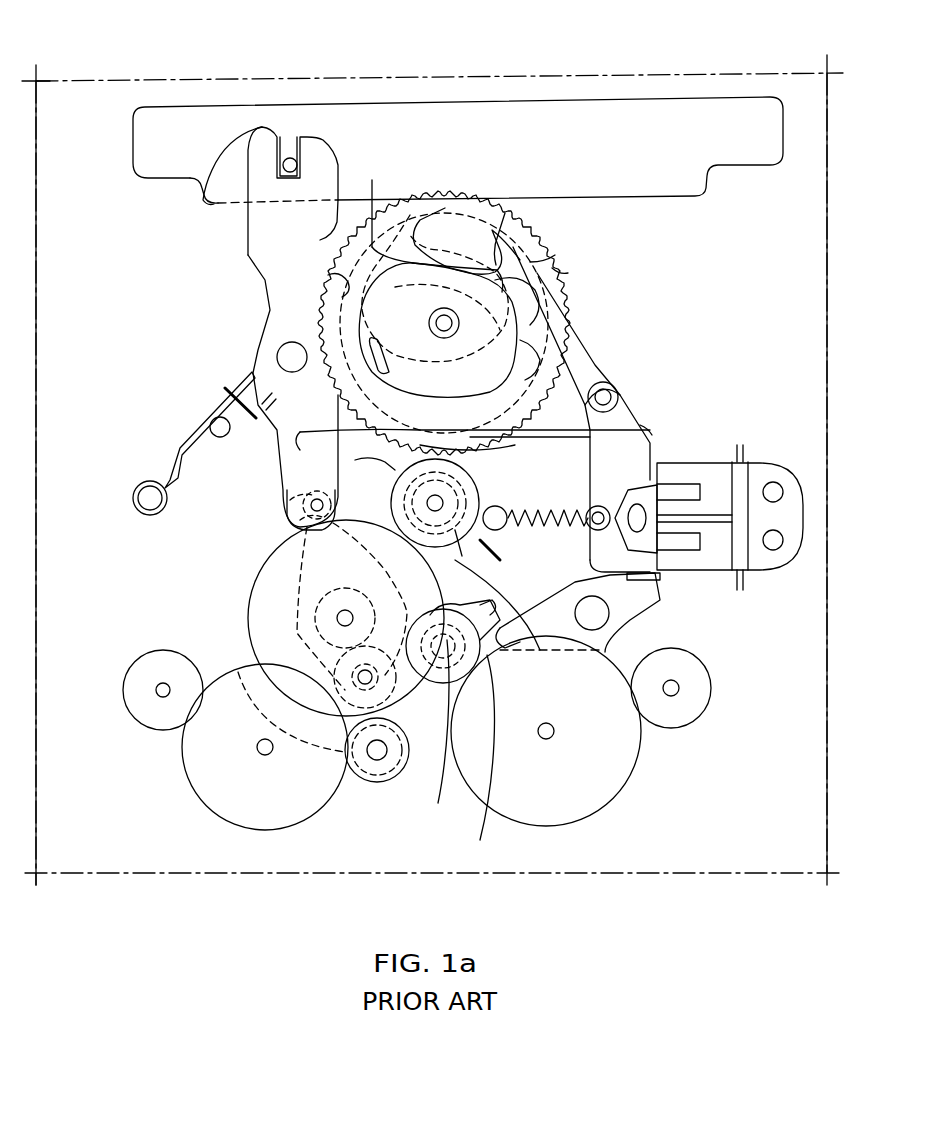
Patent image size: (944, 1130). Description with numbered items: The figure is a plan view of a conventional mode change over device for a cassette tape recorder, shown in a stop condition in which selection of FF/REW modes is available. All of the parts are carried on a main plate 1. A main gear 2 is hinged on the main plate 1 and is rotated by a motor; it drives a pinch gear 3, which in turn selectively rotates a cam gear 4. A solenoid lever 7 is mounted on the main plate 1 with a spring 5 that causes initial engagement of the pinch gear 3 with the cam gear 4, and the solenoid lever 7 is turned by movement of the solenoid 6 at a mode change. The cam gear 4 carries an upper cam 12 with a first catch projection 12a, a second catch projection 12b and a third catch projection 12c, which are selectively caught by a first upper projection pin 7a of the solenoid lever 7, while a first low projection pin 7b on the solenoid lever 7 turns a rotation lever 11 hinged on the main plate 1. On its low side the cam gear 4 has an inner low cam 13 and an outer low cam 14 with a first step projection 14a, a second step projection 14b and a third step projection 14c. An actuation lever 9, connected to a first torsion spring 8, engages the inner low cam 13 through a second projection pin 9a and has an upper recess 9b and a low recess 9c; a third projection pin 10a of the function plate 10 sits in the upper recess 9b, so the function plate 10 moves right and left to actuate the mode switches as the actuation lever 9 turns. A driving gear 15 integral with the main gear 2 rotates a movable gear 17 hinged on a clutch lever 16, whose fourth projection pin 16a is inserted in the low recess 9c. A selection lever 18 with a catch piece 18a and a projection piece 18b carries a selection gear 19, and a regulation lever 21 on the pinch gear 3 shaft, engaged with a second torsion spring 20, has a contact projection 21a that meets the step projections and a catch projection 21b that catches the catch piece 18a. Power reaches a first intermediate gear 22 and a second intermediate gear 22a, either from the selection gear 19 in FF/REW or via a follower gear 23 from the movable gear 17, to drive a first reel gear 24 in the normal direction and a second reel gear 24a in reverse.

The main plate 1 is at (815, 690).
The main gear 2 is at (262, 596).
The pinch gear 3 is at (480, 483).
The cam gear 4 is at (373, 203).
The spring 5 is at (585, 527).
The solenoid 6 is at (800, 505).
The solenoid lever 7 is at (625, 405).
The first upper projection pin 7a is at (545, 262).
The first low projection pin 7b is at (650, 578).
The first torsion spring 8 is at (185, 440).
The actuation lever 9 is at (260, 345).
The second projection pin 9a is at (330, 287).
The upper recess 9b is at (205, 193).
The low recess 9c is at (290, 500).
The function plate 10 is at (630, 105).
The third projection pin 10a is at (290, 158).
The rotation lever 11 is at (640, 605).
The upper cam 12 is at (467, 243).
The first catch projection 12a is at (500, 275).
The second catch projection 12b is at (370, 340).
The third catch projection 12c is at (535, 350).
The inner low cam 13 is at (408, 213).
The outer low cam 14 is at (505, 230).
The first step projection 14a is at (305, 432).
The second step projection 14b is at (640, 420).
The third step projection 14c is at (560, 272).
The driving gear 15 is at (325, 622).
The clutch lever 16 is at (310, 565).
The fourth projection pin 16a is at (300, 520).
The movable gear 17 is at (418, 757).
The selection lever 18 is at (453, 718).
The catch piece 18a is at (370, 487).
The projection piece 18b is at (493, 600).
The selection gear 19 is at (365, 775).
The second torsion spring 20 is at (502, 538).
The regulation lever 21 is at (453, 543).
The contact projection 21a is at (518, 453).
The catch projection 21b is at (380, 462).
The first intermediate gear 22 is at (612, 790).
The second intermediate gear 22a is at (200, 778).
The follower gear 23 is at (497, 713).
The first reel gear 24 is at (685, 718).
The second reel gear 24a is at (125, 690).